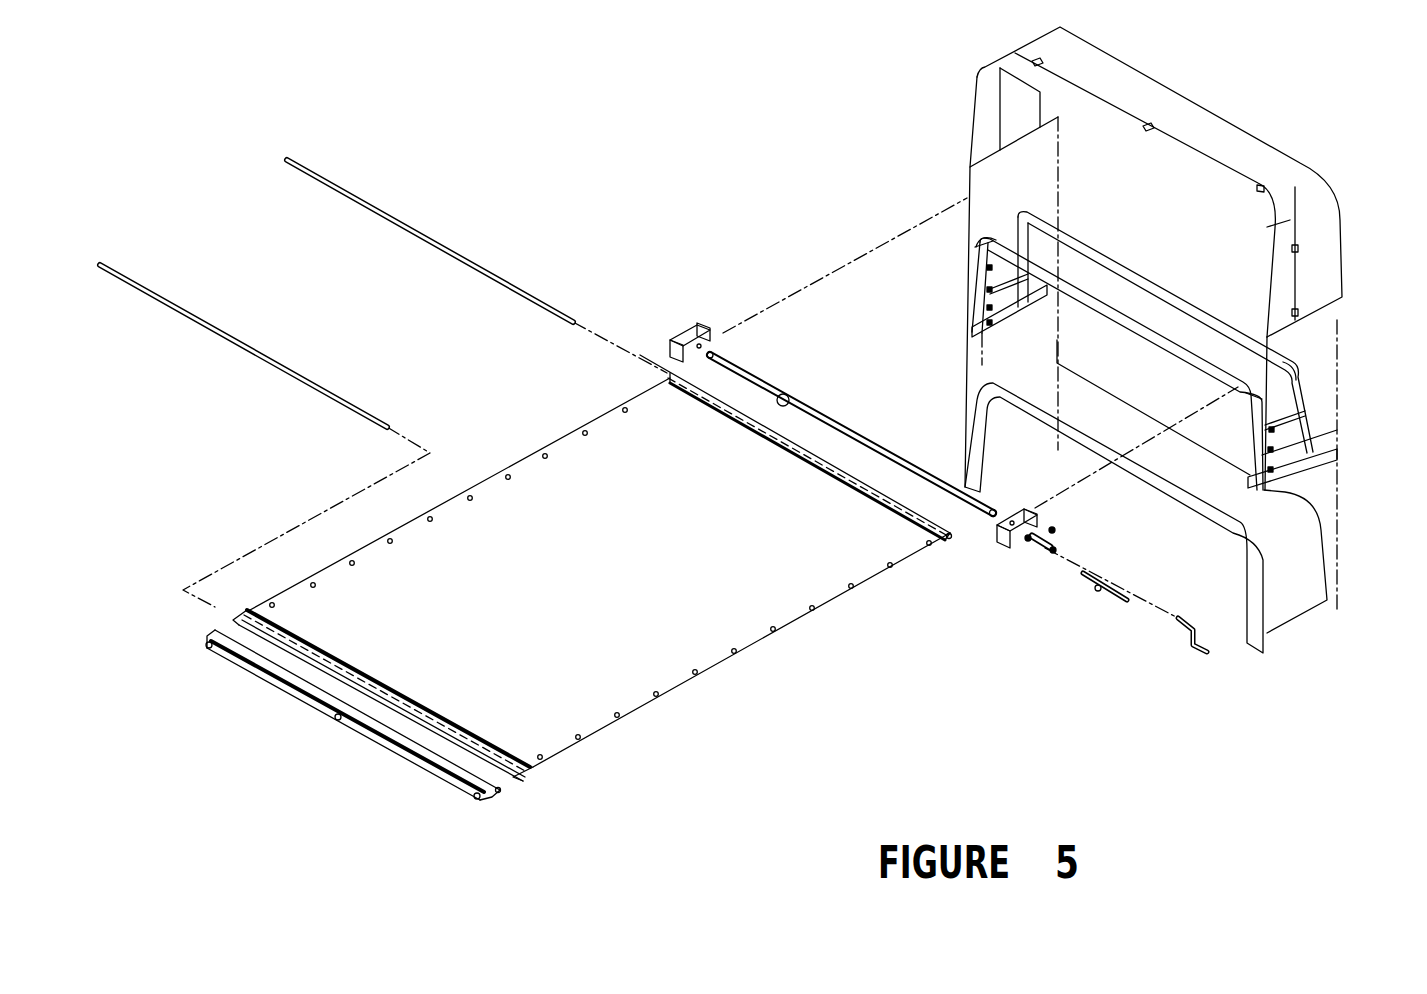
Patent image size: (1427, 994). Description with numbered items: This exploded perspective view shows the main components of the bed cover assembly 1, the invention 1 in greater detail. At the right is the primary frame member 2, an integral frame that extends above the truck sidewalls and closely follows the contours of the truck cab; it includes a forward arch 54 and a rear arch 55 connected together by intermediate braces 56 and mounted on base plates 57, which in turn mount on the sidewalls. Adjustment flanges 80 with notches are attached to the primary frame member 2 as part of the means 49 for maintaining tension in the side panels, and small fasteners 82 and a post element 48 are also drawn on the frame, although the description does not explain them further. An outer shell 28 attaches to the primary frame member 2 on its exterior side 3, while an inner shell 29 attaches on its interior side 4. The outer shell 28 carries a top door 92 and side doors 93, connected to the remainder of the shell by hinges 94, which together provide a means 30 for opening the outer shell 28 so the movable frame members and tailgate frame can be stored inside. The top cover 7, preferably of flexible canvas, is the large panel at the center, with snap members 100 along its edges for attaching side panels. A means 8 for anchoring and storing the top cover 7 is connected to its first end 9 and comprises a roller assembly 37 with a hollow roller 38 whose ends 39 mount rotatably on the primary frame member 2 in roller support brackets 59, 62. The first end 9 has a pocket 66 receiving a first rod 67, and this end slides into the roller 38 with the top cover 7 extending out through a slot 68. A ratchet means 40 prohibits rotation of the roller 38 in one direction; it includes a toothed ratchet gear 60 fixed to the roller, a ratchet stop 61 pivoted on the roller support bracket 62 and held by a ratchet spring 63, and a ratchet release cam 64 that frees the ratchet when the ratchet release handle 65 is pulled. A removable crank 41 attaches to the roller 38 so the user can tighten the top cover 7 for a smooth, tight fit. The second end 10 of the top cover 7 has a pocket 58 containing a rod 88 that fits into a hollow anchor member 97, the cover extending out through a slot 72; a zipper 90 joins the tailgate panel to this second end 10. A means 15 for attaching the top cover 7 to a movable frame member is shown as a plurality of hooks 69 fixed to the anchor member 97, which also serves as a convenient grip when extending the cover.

The bed cover assembly 1 is at (707, 204).
The primary frame member 2 is at (1334, 392).
The exterior side 3 is at (1143, 253).
The interior side 4 is at (1179, 361).
The top cover 7 is at (493, 488).
The means for anchoring and storing top cover 8 is at (981, 520).
The first end 9 is at (785, 455).
The second end 10 is at (374, 679).
The means for attaching top cover 15 is at (505, 800).
The outer shell 28 is at (1242, 143).
The inner shell 29 is at (1318, 573).
The means for opening outer shell 30 is at (982, 66).
The roller assembly 37 is at (718, 330).
The roller 38 is at (832, 417).
The ends 39 is at (715, 352).
The ratchet means 40 is at (1076, 535).
The crank 41 is at (1190, 648).
The upright post 48 is at (1281, 436).
The means for maintaining tension 49 is at (974, 249).
The forward arch 54 is at (1283, 350).
The rear arch 55 is at (1157, 334).
The intermediate braces 56 is at (1010, 231).
The base plates 57 is at (1020, 319).
The pocket 58 is at (513, 780).
The roller support bracket 59 is at (708, 325).
The toothed ratchet gear 60 is at (1040, 550).
The ratchet stop 61 is at (1027, 546).
The roller support bracket 62 is at (1034, 518).
The ratchet spring 63 is at (1031, 550).
The ratchet release cam 64 is at (1094, 594).
The ratchet release handle 65 is at (1124, 601).
The pocket 66 is at (755, 425).
The first rod 67 is at (423, 237).
The slot 68 is at (783, 388).
The hooks 69 is at (210, 647).
The slot 72 is at (503, 790).
The adjustment flanges 80 is at (993, 258).
The bolt 82 is at (991, 294).
The rod 88 is at (243, 344).
The zipper 90 is at (247, 610).
The top door 92 is at (1178, 147).
The side doors 93 is at (975, 121).
The hinges 94 is at (1040, 62).
The anchor member 97 is at (217, 633).
The snap members 100 is at (425, 517).